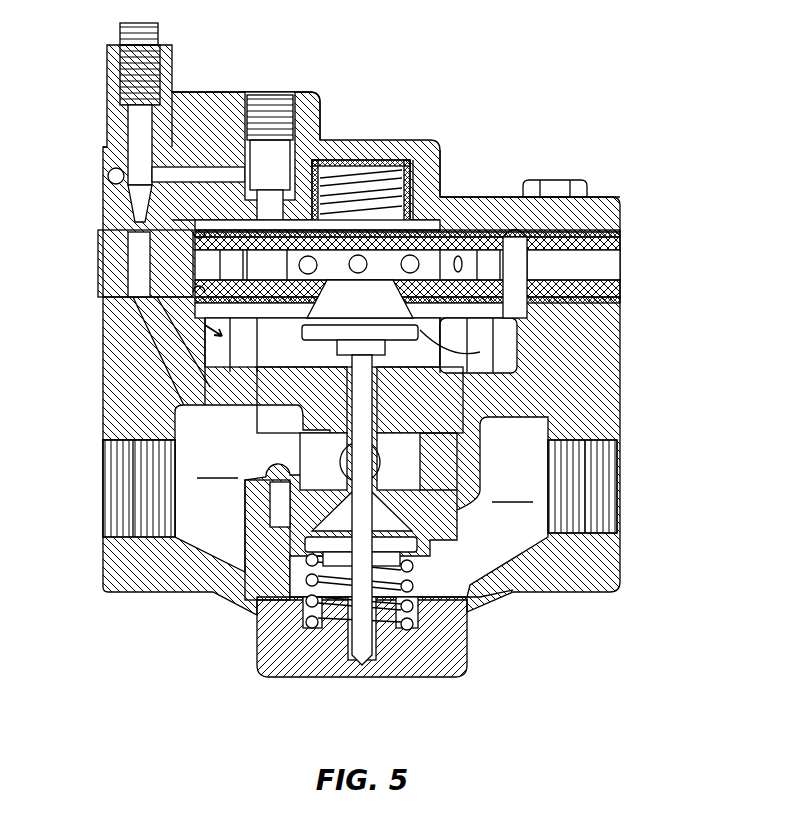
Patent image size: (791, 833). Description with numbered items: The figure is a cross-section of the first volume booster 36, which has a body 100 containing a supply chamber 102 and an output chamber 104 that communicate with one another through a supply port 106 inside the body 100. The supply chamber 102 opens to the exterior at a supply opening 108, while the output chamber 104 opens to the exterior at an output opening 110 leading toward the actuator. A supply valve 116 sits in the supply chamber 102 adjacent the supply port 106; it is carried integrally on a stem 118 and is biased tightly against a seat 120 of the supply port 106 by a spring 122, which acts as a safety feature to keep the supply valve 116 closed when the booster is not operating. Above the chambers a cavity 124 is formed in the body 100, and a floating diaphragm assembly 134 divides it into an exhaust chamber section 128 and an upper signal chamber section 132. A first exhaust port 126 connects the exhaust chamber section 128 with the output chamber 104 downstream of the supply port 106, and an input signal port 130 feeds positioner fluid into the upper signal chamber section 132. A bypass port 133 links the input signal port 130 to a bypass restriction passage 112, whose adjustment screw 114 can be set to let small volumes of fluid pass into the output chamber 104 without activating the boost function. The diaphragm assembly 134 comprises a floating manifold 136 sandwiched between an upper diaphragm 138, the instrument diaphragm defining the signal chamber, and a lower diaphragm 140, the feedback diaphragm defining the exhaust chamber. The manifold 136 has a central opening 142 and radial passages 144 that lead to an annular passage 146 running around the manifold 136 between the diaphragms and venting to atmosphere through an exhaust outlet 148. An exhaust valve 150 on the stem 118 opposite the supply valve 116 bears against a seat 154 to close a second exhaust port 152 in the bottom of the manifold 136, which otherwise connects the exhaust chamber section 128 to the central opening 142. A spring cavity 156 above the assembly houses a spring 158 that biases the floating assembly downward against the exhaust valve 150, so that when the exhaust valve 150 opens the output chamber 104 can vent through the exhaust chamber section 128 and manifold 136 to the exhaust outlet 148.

The first volume booster 36 is at (103, 205).
The body 100 is at (618, 405).
The supply chamber 102 is at (419, 507).
The output chamber 104 is at (252, 488).
The supply port 106 is at (420, 534).
The supply opening 108 is at (620, 528).
The output opening 110 is at (103, 523).
The bypass restriction passage 112 is at (128, 360).
The adjustment screw 114 is at (108, 47).
The supply valve 116 is at (254, 614).
The stem 118 is at (265, 492).
The seat 120 is at (424, 548).
The spring 122 is at (475, 620).
The cavity 124 is at (135, 303).
The first exhaust port 126 is at (125, 325).
The exhaust chamber section 128 is at (217, 384).
The input signal port 130 is at (285, 100).
The upper signal chamber section 132 is at (237, 227).
The bypass port 133 is at (190, 175).
The floating diaphragm assembly 134 is at (98, 243).
The floating manifold 136 is at (500, 197).
The upper diaphragm 138 is at (618, 213).
The lower diaphragm 140 is at (600, 306).
The central opening 142 is at (460, 197).
The radial passages 144 is at (470, 217).
The annular passage 146 is at (526, 265).
The exhaust outlet 148 is at (603, 257).
The exhaust valve 150 is at (450, 352).
The second exhaust port 152 is at (360, 317).
The seat 154 is at (470, 338).
The spring cavity 156 is at (398, 222).
The spring 158 is at (352, 160).